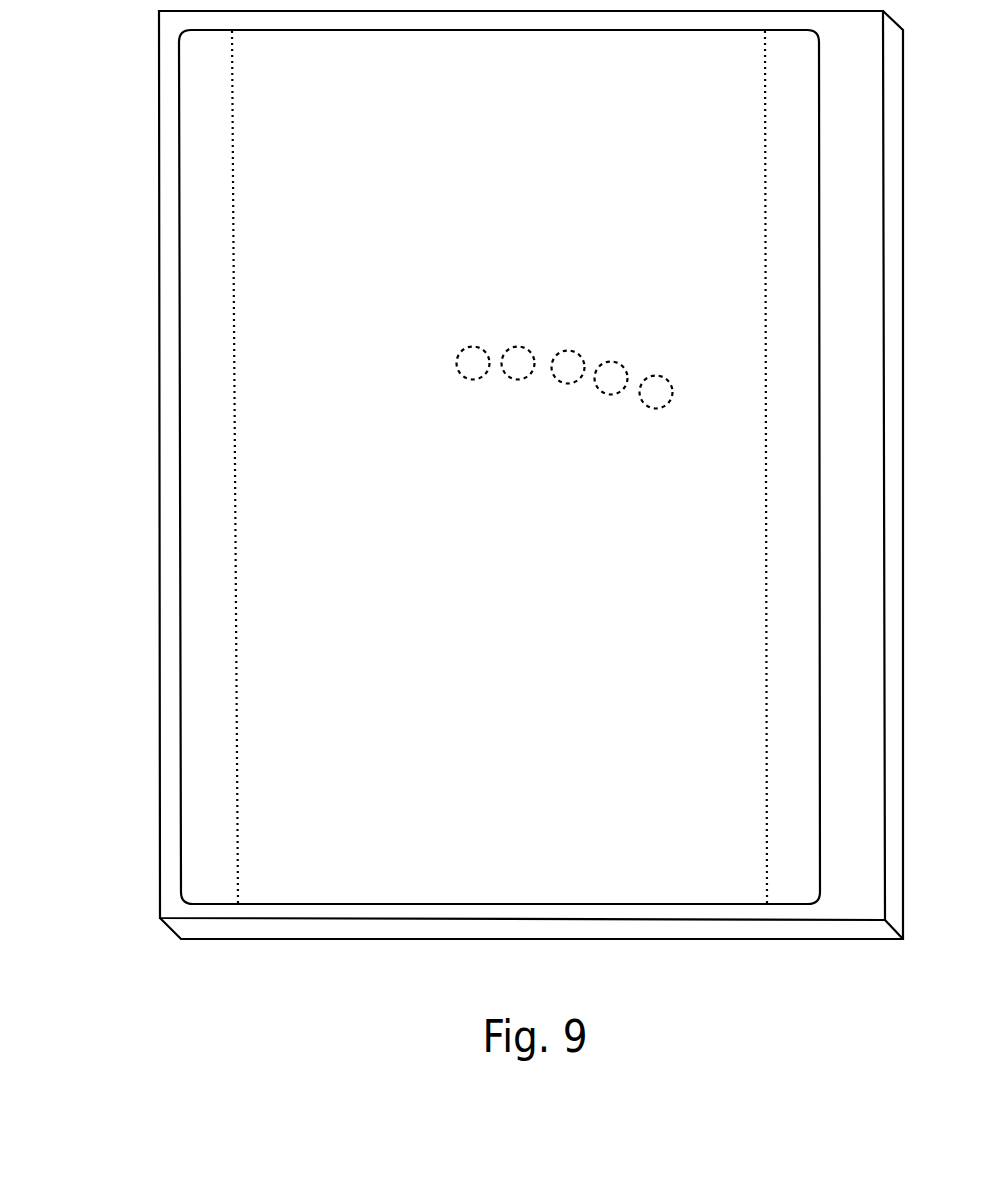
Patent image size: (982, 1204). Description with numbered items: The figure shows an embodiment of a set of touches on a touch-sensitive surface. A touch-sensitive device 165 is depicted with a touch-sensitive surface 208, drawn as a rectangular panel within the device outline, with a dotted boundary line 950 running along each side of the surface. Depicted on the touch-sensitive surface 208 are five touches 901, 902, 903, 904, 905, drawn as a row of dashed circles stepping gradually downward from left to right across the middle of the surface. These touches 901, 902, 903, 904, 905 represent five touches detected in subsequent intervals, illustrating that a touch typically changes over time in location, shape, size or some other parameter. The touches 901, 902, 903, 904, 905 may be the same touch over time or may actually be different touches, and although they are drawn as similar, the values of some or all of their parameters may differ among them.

The touch-sensitive device 165 is at (159, 182).
The touch-sensitive surface 208 is at (179, 298).
The boundary line 950 is at (237, 805).
The touch 901 is at (475, 381).
The touch 902 is at (518, 346).
The touch 903 is at (563, 386).
The touch 904 is at (611, 361).
The touch 905 is at (658, 410).